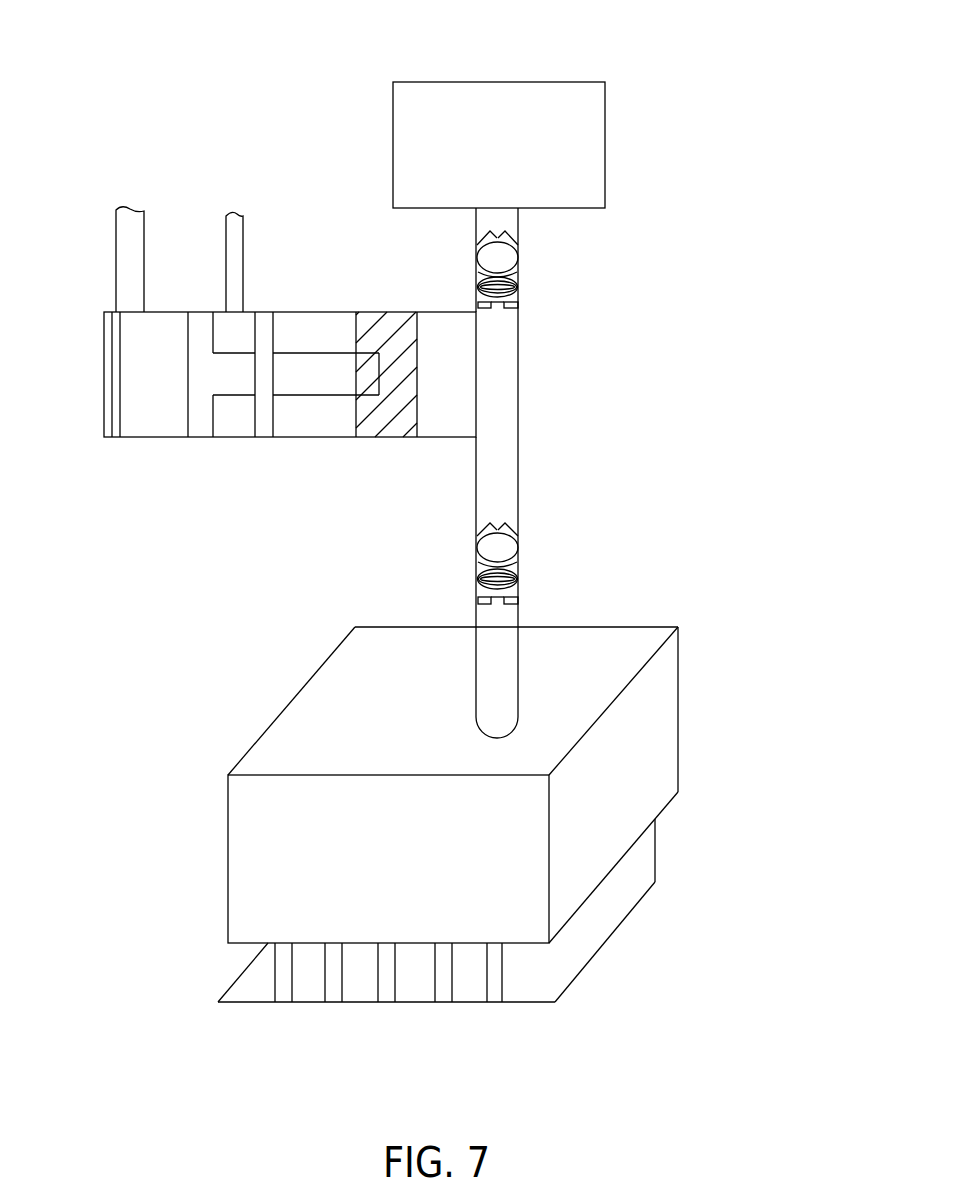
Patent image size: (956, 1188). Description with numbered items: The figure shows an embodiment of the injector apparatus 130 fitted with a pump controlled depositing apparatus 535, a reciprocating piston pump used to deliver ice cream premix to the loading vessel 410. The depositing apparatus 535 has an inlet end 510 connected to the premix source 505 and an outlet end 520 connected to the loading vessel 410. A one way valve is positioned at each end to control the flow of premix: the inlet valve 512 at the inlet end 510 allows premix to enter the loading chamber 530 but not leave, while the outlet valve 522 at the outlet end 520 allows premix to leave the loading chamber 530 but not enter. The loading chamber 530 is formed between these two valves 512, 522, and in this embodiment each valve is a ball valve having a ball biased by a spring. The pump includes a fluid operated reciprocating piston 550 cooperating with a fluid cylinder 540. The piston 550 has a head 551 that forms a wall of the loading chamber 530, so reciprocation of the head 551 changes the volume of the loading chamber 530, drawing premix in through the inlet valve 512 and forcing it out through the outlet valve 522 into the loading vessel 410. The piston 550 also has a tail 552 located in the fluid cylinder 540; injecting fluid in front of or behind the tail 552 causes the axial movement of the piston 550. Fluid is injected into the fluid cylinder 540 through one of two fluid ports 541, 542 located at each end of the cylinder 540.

The premix source 505 is at (507, 82).
The inlet end 510 is at (520, 222).
The inlet valve 512 is at (520, 280).
The pump controlled depositing apparatus 535 is at (546, 380).
The loading chamber 530 is at (483, 412).
The injector apparatus 130 is at (697, 515).
The outlet valve 522 is at (518, 568).
The outlet end 520 is at (493, 667).
The loading vessel 410 is at (680, 728).
The fluid port 542 is at (116, 267).
The fluid port 541 is at (243, 270).
The fluid cylinder 540 is at (150, 420).
The tail 552 is at (202, 422).
The piston 550 is at (313, 353).
The head 551 is at (390, 420).